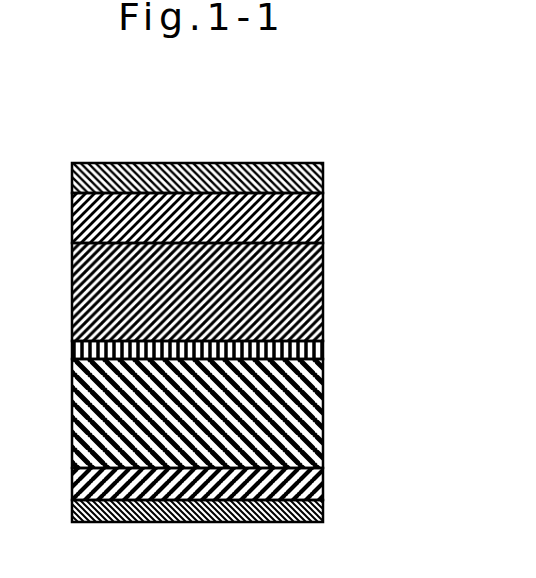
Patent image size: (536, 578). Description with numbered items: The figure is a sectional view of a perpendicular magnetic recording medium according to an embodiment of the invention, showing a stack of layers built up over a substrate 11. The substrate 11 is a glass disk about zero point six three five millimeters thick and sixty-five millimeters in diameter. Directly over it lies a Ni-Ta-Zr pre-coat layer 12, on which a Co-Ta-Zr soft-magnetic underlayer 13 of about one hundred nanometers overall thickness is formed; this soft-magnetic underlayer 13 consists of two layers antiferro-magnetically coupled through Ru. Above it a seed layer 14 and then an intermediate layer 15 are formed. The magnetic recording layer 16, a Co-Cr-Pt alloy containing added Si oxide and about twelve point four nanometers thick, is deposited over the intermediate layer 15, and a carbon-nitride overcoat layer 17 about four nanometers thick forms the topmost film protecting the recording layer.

The substrate 11 is at (320, 508).
The pre-coat layer 12 is at (318, 488).
The soft-magnetic underlayer 13 is at (315, 442).
The seed layer 14 is at (315, 355).
The intermediate layer 15 is at (315, 292).
The magnetic recording layer 16 is at (313, 225).
The overcoat layer 17 is at (323, 180).